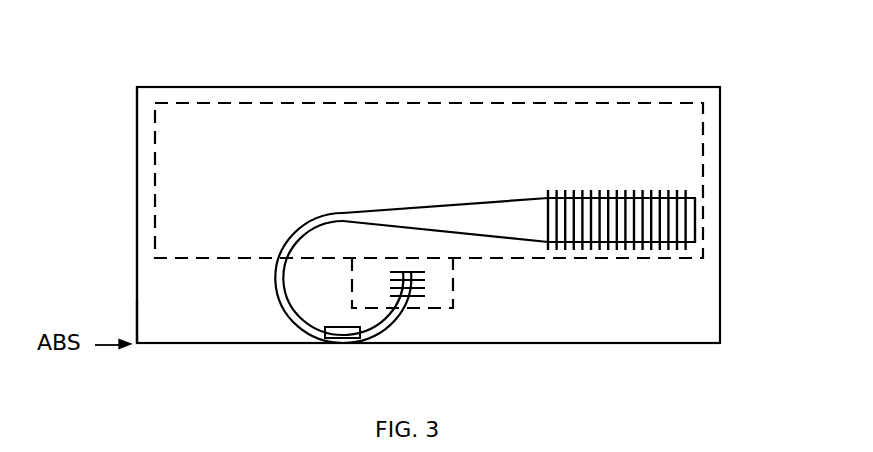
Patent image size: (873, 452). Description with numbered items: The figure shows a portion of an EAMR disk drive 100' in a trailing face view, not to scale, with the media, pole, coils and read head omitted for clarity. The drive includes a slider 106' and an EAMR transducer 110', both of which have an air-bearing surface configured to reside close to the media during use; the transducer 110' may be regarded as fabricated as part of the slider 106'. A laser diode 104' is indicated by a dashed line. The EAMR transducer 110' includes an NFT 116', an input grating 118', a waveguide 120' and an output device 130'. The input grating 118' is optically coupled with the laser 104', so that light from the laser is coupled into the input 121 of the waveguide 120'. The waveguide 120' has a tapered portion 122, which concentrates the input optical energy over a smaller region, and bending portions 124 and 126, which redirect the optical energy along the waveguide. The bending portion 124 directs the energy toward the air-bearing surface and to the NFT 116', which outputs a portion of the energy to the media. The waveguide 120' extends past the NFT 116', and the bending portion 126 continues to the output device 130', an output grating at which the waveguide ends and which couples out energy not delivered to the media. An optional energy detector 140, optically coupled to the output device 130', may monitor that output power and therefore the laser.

The EAMR disk drive 100' is at (428, 182).
The laser diode 104' is at (385, 180).
The EAMR transducer 110' is at (102, 215).
The slider 106' is at (109, 303).
The bending portion 124 is at (257, 275).
The tapered portion 122 is at (480, 187).
The input 121 is at (592, 187).
The waveguide 120' is at (746, 202).
The input grating 118' is at (673, 279).
The NFT 116' is at (306, 358).
The energy detector 140 is at (453, 305).
The output device 130' is at (470, 336).
The bending portion 126 is at (412, 313).